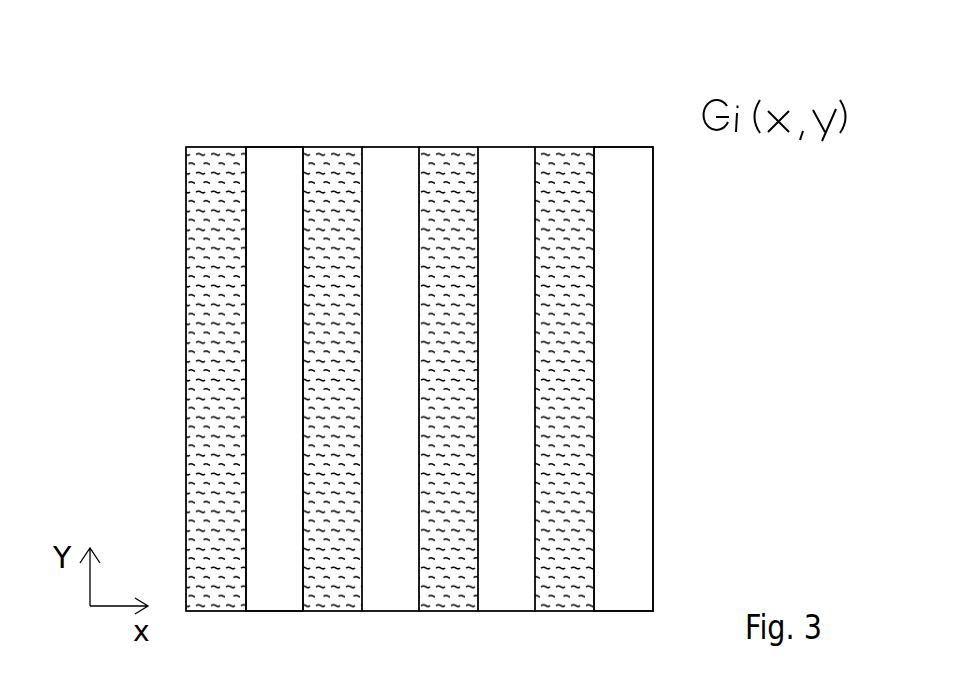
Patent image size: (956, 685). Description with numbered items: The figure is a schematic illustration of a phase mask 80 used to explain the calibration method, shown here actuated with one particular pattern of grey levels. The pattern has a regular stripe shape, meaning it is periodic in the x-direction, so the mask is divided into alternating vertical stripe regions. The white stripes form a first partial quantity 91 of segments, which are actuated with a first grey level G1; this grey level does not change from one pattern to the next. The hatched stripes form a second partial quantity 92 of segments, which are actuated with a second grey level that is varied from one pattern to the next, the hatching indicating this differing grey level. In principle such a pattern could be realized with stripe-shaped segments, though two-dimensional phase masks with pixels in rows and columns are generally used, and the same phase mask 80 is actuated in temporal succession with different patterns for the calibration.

The phase mask 80 is at (143, 86).
The first partial quantity of segments 91 is at (292, 349).
The second partial quantity of segments 92 is at (322, 632).
The first grey level G1 is at (623, 165).